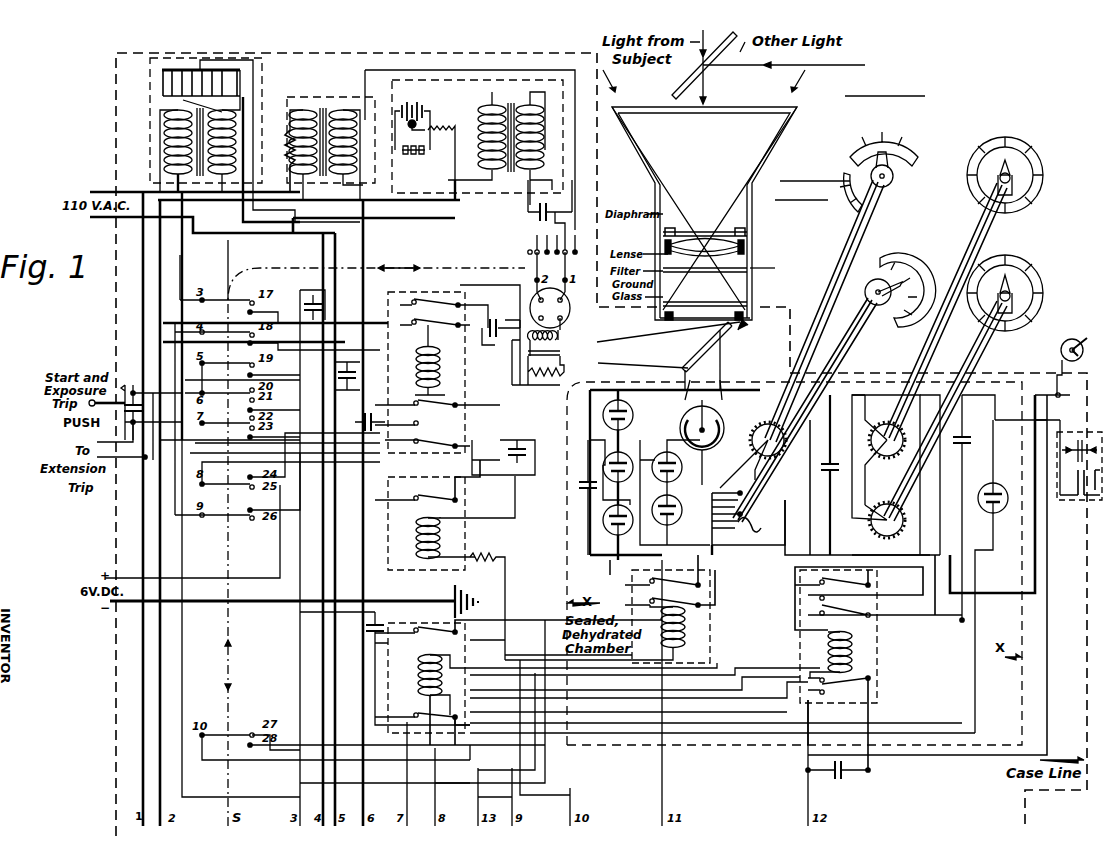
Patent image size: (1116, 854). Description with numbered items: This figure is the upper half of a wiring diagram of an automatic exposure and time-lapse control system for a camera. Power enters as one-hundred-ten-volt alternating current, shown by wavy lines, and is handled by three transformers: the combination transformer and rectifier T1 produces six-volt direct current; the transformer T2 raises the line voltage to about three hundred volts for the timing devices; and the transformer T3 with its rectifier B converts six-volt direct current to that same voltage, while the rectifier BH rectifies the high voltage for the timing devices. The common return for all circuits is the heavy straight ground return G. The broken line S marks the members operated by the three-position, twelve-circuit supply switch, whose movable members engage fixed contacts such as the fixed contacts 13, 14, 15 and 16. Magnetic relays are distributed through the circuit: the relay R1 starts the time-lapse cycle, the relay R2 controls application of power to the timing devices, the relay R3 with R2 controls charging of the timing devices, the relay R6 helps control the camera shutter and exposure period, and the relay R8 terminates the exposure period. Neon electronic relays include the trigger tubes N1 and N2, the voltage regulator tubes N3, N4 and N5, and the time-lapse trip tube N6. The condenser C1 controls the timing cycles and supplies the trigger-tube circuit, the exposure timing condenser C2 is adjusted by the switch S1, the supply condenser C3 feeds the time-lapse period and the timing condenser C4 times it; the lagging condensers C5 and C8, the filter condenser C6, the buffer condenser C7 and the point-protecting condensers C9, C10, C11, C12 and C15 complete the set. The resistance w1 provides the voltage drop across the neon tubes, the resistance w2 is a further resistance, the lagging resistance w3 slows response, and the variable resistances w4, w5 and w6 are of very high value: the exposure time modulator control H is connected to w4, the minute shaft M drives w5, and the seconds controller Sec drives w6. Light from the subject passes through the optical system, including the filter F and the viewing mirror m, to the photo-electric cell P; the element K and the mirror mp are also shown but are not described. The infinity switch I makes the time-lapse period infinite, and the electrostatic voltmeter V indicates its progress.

The combination transformer and rectifier T1 is at (139, 107).
The transformer T2 is at (340, 94).
The transformer T3 is at (538, 83).
The rectifier B is at (425, 142).
The resistance w1 is at (548, 352).
The resistance w2 is at (280, 161).
The lagging resistance w3 is at (487, 606).
The variable resistance w4 is at (760, 445).
The variable resistance w5 is at (883, 450).
The variable resistance w6 is at (891, 475).
The condenser C1 is at (583, 497).
The exposure timing condenser C2 is at (748, 523).
The supply condenser C3 is at (837, 475).
The timing condenser C4 is at (1000, 508).
The lagging condenser C5 is at (311, 304).
The filter condenser C6 is at (490, 315).
The buffer condenser C7 is at (550, 215).
The lagging condenser C8 is at (503, 457).
The point-protecting condenser C9 is at (345, 375).
The point-protecting condenser C10 is at (838, 779).
The point-protecting condenser C11 is at (144, 406).
The point-protecting condenser C12 is at (362, 424).
The point-protecting condenser C15 is at (364, 629).
The magnetic relay R1 is at (445, 515).
The magnetic relay R2 is at (437, 375).
The magnetic relay R3 is at (878, 662).
The magnetic relay R6 is at (670, 609).
The magnetic relay R8 is at (422, 681).
The trigger tube N1 is at (676, 467).
The trigger tube N2 is at (676, 508).
The voltage regulator tube N3 is at (623, 461).
The voltage regulator tube N4 is at (620, 528).
The voltage regulator tube N5 is at (627, 414).
The time-lapse trip tube N6 is at (995, 576).
The supply switch S is at (375, 532).
The switch S1 is at (839, 376).
The exposure time modulator control H is at (852, 260).
The time-lapse minute resistor shaft M is at (990, 180).
The seconds controller Sec is at (979, 375).
The infinity switch I is at (1070, 361).
The electrostatic voltmeter V is at (1079, 470).
The photo-electric cell P is at (706, 432).
The coil K is at (552, 343).
The ground return G is at (294, 601).
The filter F is at (708, 275).
The viewing mirror m is at (688, 360).
The mirror m' mp is at (678, 84).
The rectifier BH is at (550, 309).
The fixed contact 13 is at (584, 243).
The fixed contact 14 is at (564, 243).
The fixed contact 15 is at (540, 243).
The fixed contact 16 is at (522, 252).